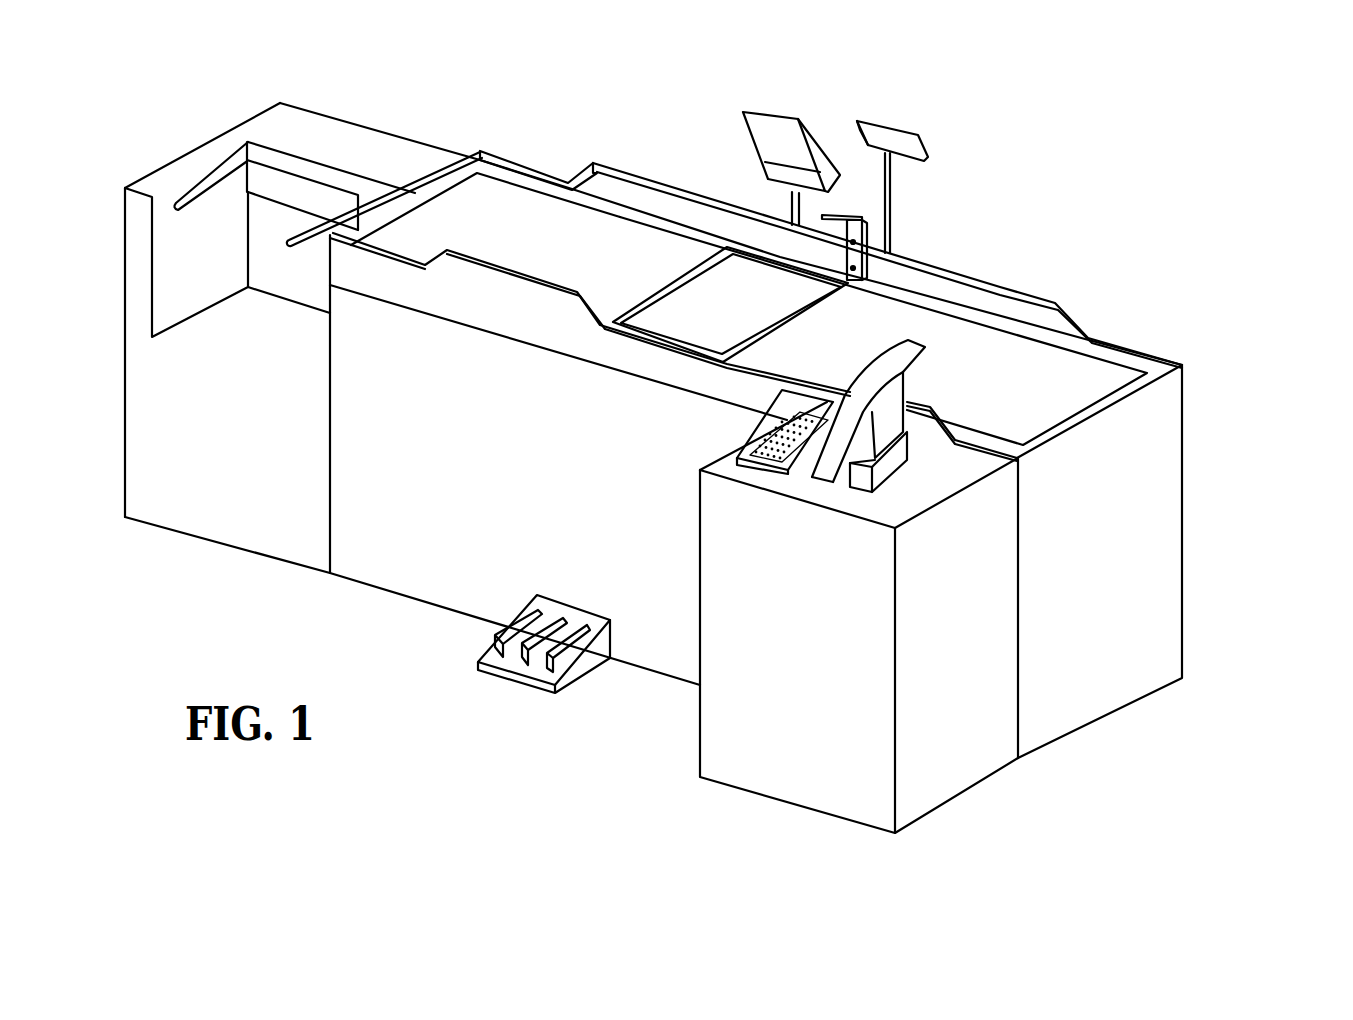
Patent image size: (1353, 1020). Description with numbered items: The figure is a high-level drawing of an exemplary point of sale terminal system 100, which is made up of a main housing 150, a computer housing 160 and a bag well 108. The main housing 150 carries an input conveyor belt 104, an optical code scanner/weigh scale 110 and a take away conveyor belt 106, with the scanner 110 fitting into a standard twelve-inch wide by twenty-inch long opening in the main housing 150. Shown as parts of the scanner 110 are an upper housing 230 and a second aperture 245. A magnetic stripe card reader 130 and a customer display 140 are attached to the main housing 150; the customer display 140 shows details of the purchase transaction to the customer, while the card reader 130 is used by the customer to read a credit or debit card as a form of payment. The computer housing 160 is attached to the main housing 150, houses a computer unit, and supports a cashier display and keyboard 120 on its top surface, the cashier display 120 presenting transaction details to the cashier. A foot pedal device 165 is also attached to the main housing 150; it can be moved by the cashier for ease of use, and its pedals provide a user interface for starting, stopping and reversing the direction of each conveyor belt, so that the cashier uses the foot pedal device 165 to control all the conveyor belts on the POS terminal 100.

The point of sale terminal system 100 is at (1228, 100).
The input conveyor belt 104 is at (990, 345).
The take away conveyor belt 106 is at (510, 213).
The bag well 108 is at (182, 272).
The optical code scanner/weigh scale 110 is at (760, 228).
The cashier display and keyboard 120 is at (923, 367).
The magnetic stripe card reader 130 is at (762, 110).
The customer display 140 is at (927, 136).
The main housing 150 is at (1108, 564).
The computer housing 160 is at (950, 727).
The foot pedal device 165 is at (517, 677).
The upper housing 230 is at (862, 217).
The second aperture 245 is at (848, 313).